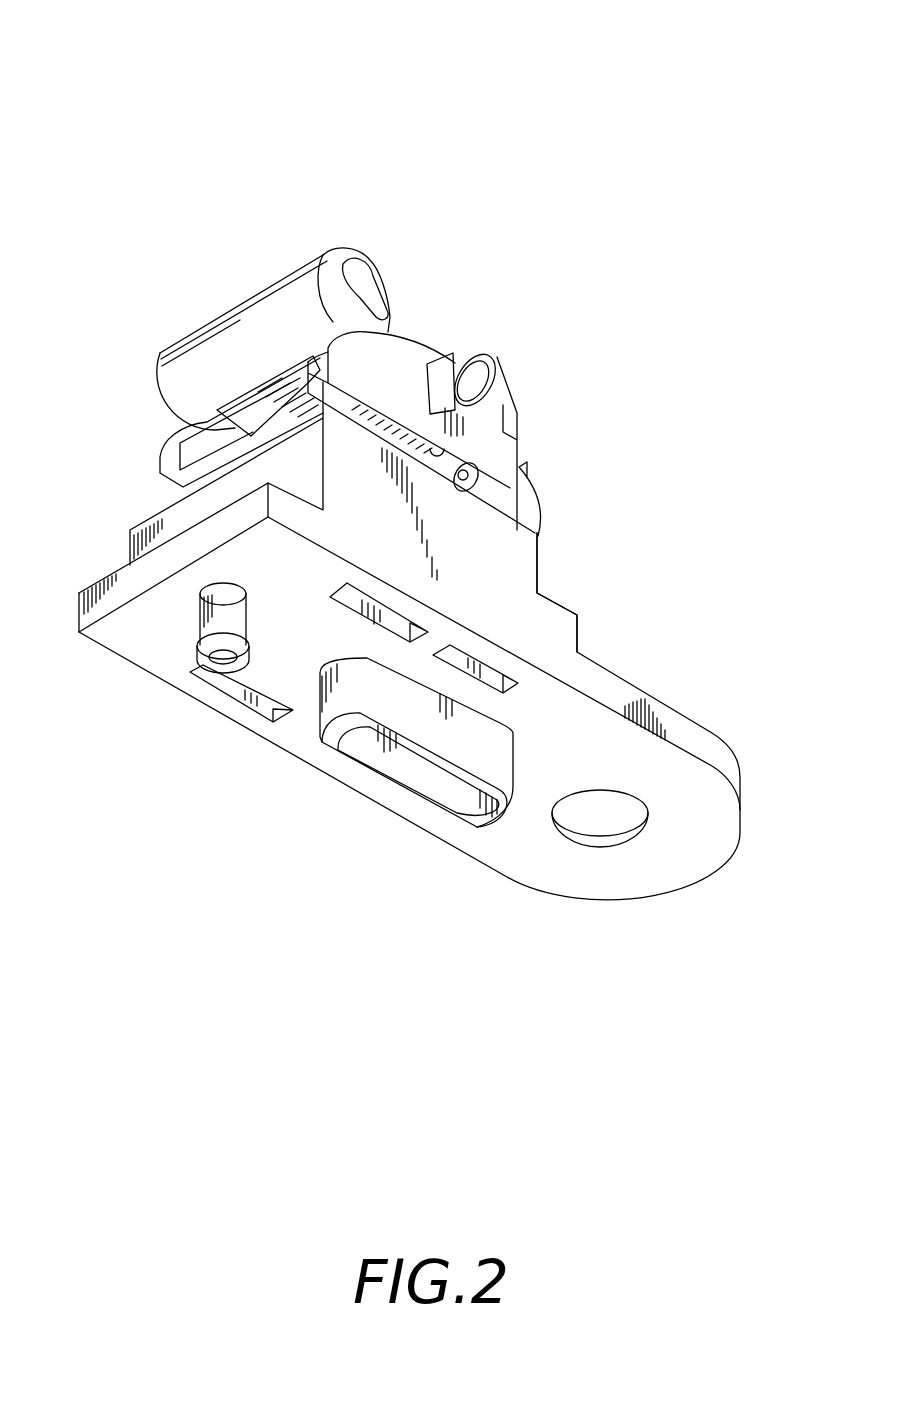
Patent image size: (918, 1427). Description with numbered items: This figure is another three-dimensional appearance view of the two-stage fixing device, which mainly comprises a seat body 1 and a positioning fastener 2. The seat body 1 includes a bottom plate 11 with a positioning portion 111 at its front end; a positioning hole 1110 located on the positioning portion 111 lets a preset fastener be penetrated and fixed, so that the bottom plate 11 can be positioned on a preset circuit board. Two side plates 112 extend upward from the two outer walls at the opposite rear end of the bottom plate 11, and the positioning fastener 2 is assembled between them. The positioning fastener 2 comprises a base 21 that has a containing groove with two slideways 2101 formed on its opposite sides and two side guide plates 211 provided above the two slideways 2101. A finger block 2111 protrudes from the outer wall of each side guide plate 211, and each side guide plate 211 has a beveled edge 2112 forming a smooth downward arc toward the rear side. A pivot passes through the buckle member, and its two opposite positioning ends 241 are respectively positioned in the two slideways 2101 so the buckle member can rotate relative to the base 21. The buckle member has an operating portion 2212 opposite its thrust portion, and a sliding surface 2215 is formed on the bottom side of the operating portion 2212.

The seat body 1 is at (105, 738).
The bottom plate 11 is at (160, 643).
The positioning portion 111 is at (615, 700).
The side plates 112 is at (542, 617).
The positioning hole 1110 is at (597, 810).
The positioning fastener 2 is at (411, 100).
The base 21 is at (411, 205).
The side guide plates 211 is at (378, 362).
The finger block 2111 is at (477, 375).
The beveled edge 2112 is at (320, 357).
The slideways 2101 is at (440, 455).
The positioning ends 241 is at (472, 470).
The operating portion 2212 is at (167, 343).
The sliding surface 2215 is at (282, 393).